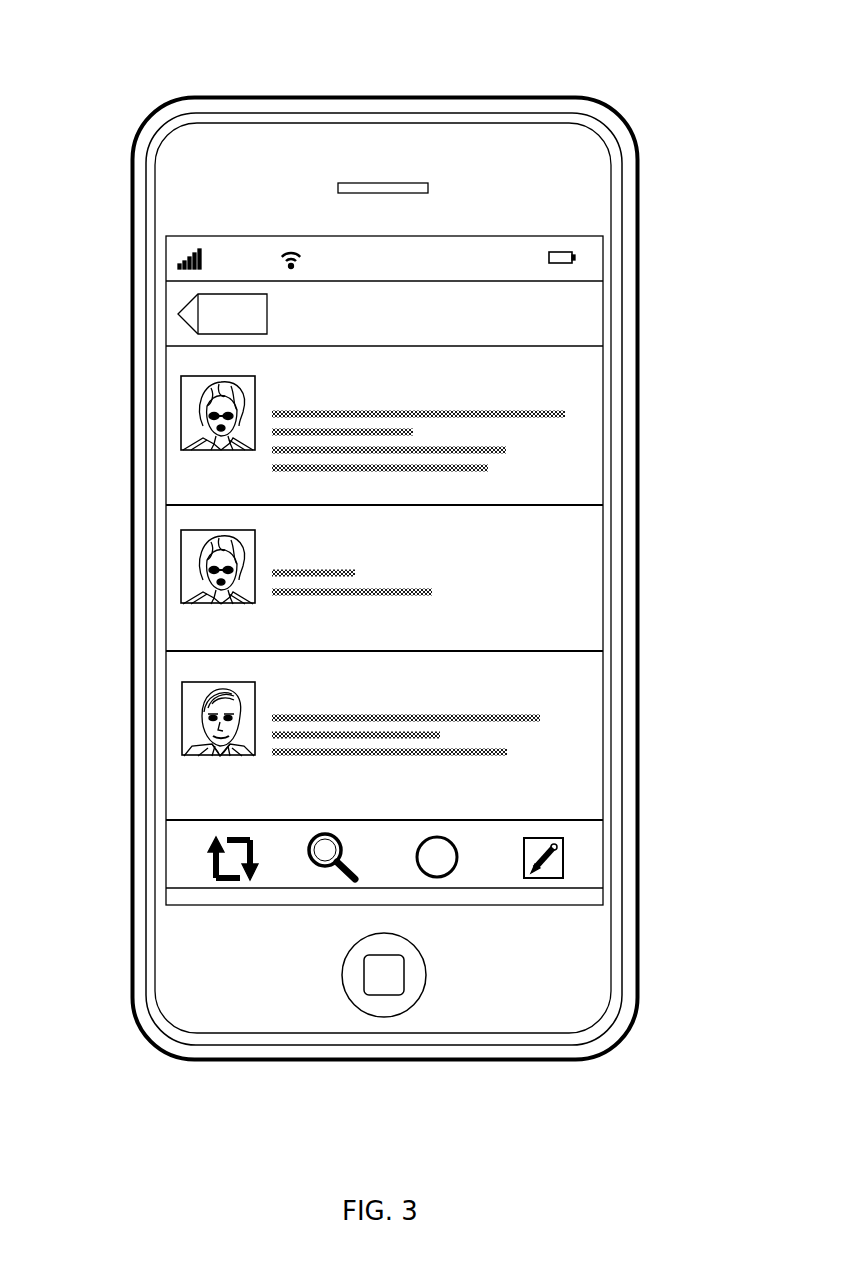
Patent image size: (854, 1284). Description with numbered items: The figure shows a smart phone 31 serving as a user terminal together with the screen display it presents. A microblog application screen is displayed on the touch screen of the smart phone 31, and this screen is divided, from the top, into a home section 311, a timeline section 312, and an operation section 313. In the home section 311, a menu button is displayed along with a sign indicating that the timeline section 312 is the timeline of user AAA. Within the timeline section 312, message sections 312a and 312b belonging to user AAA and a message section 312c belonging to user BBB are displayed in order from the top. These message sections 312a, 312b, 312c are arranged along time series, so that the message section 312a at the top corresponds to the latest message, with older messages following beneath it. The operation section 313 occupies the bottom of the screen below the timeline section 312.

The smart phone 31 is at (272, 54).
The home section 311 is at (652, 247).
The timeline section 312 is at (652, 808).
The message section 312a is at (123, 355).
The message section 312b is at (123, 508).
The message section 312c is at (123, 657).
The operation section 313 is at (652, 820).